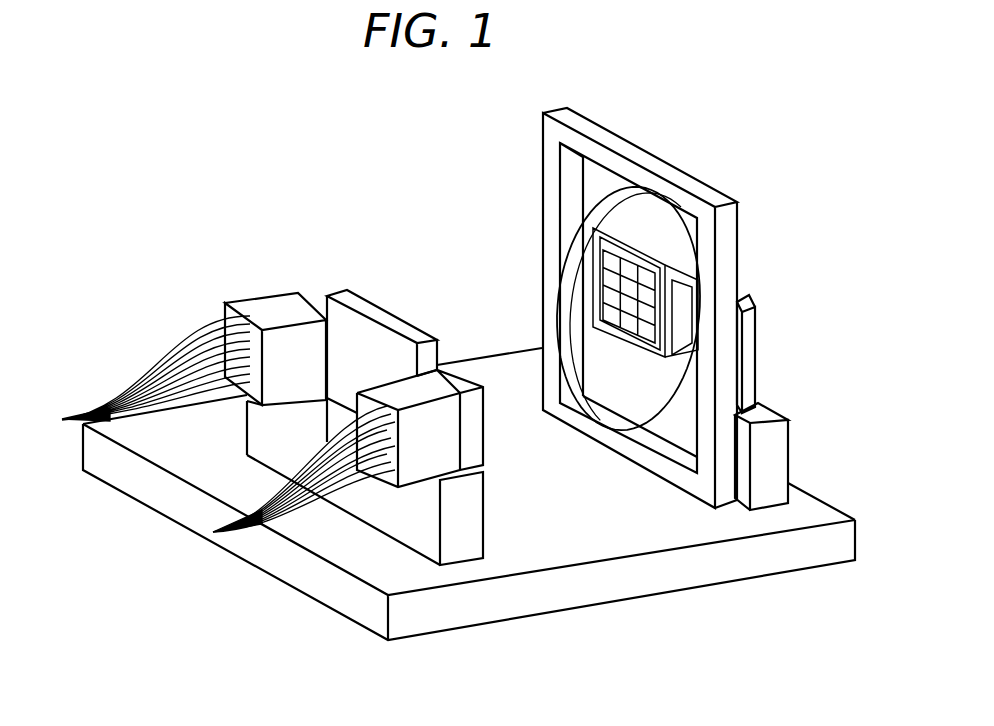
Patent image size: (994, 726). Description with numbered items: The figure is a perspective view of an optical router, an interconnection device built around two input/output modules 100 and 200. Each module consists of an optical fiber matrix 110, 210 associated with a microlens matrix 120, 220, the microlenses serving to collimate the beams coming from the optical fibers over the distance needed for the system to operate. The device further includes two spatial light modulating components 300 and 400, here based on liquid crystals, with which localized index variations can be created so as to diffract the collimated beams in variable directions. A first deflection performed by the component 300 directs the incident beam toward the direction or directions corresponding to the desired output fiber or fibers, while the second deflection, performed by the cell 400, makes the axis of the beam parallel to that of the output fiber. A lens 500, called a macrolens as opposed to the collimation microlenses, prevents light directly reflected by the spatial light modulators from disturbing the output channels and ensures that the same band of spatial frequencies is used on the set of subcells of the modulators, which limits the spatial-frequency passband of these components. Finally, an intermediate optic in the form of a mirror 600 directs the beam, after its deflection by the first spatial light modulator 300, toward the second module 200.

The input/output module 100 is at (219, 199).
The optical fiber matrix 110 is at (268, 310).
The microlens matrix 120 is at (314, 293).
The input/output module 200 is at (403, 505).
The optical fiber matrix 210 is at (438, 467).
The microlens matrix 220 is at (478, 452).
The spatial light modulating component 300 is at (623, 257).
The spatial light modulating component 400 is at (757, 324).
The lens 500 is at (588, 224).
The mirror 600 is at (393, 323).